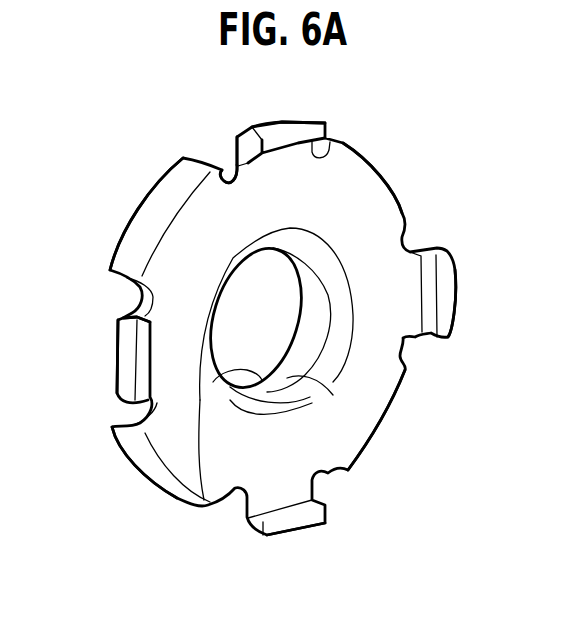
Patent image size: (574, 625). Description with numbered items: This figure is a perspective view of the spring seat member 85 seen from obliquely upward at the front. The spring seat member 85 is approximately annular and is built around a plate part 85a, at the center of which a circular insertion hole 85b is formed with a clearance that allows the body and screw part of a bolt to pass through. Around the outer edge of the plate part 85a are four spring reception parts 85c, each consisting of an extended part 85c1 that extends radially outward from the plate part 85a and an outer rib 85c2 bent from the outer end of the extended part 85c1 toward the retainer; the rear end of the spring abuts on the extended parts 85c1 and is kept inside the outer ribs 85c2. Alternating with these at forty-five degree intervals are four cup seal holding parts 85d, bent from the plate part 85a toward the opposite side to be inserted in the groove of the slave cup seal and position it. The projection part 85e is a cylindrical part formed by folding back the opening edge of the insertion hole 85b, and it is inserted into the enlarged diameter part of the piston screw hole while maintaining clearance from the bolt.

The spring seat member 85 is at (118, 142).
The plate part 85a is at (367, 208).
The insertion hole 85b is at (320, 382).
The spring reception part 85c is at (317, 122).
The extended part 85c1 is at (233, 168).
The outer rib 85c2 is at (280, 140).
The cup seal holding part 85d is at (137, 211).
The projection part 85e is at (206, 500).